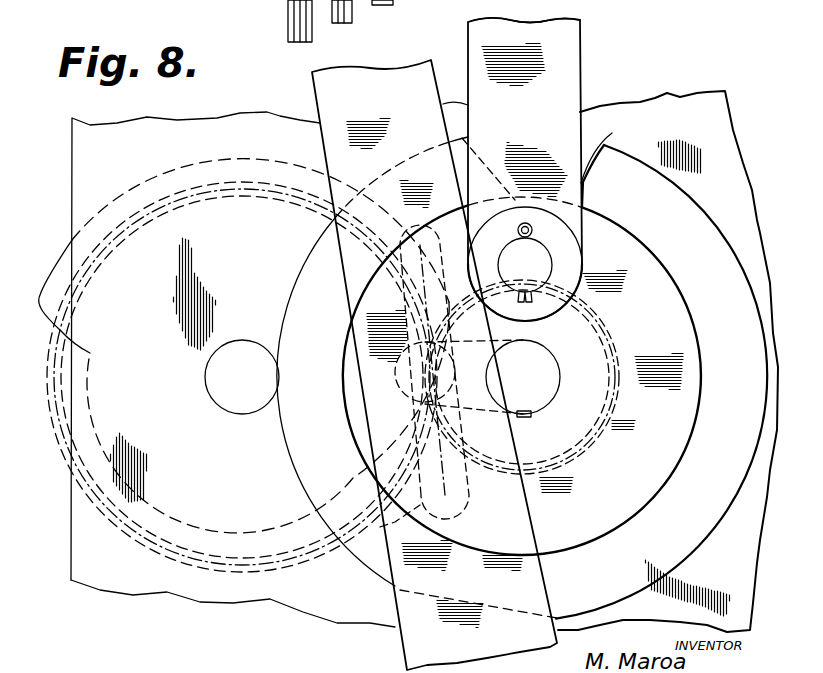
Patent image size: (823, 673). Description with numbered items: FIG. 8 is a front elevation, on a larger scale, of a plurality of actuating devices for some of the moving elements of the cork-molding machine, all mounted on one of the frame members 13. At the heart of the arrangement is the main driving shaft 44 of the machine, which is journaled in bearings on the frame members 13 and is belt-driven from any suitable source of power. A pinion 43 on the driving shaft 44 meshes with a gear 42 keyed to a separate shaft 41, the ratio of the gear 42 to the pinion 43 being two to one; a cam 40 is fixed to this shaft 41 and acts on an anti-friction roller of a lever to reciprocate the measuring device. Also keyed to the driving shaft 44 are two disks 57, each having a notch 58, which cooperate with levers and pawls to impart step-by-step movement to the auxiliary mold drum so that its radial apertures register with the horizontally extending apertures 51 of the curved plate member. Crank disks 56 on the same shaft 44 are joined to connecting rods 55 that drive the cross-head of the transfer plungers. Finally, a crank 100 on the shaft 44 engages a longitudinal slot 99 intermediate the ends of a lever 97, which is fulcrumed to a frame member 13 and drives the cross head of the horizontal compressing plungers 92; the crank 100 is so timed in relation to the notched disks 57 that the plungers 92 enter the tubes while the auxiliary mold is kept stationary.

The frame member 13 is at (80, 535).
The cam 40 is at (52, 272).
The shaft 41 is at (220, 377).
The gear 42 is at (158, 549).
The pinion 43 is at (613, 337).
The driving shaft 44 is at (551, 372).
The apertures 51 is at (542, 13).
The connecting rods 55 is at (574, 62).
The crank disks 56 is at (620, 229).
The disk 57 is at (695, 207).
The notch 58 is at (604, 149).
The plungers 92 is at (290, 10).
The lever 97 is at (400, 594).
The longitudinal slot 99 is at (392, 528).
The crank 100 is at (395, 400).